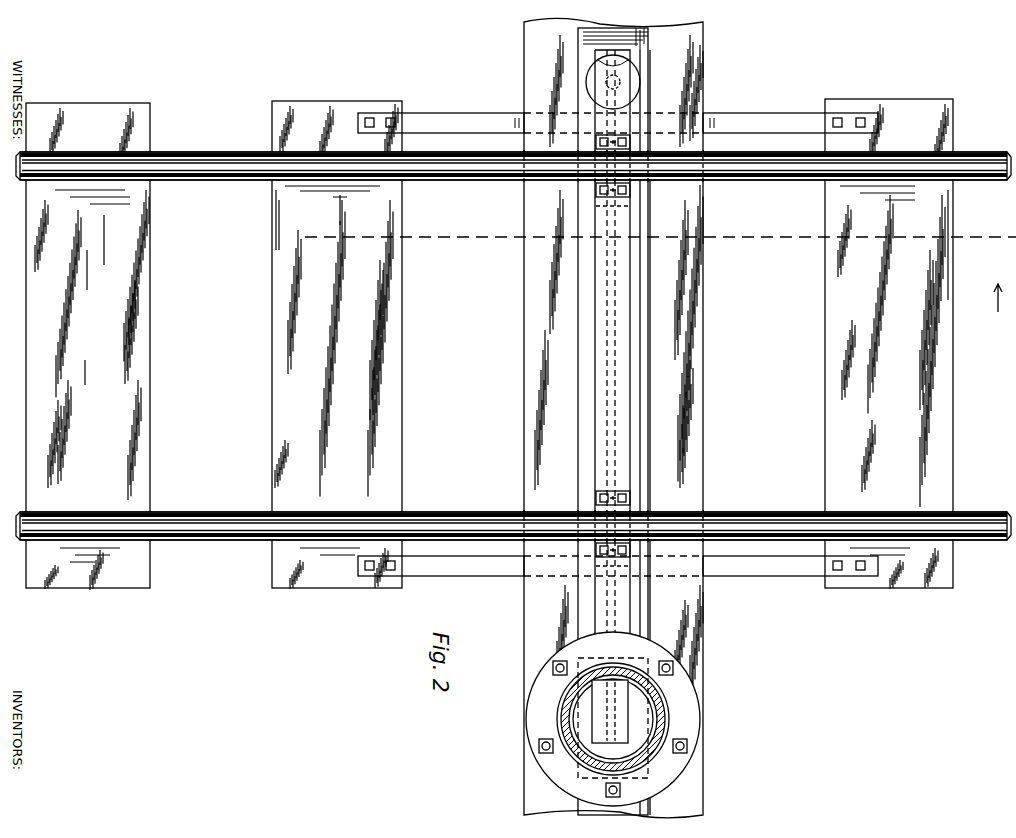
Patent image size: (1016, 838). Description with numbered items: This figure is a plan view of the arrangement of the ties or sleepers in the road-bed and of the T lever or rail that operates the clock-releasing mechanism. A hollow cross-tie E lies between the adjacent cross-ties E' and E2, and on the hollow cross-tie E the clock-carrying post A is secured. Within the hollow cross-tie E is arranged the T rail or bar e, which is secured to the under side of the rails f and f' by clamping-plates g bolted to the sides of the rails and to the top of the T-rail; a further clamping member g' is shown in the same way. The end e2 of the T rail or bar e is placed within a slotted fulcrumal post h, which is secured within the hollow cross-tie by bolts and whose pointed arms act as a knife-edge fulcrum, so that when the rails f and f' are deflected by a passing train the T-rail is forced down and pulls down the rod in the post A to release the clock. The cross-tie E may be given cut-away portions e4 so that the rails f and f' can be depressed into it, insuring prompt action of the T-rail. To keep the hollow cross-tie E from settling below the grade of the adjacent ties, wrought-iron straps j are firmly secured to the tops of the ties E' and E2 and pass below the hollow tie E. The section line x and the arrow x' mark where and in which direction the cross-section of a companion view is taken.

The clock-carrying post A is at (556, 721).
The hollow cross-tie E is at (613, 417).
The adjacent cross-tie E' is at (889, 344).
The adjacent cross-tie E2 is at (337, 345).
The T rail or bar e is at (600, 724).
The end of T-rail e2 is at (613, 83).
The cut-away portions e4 is at (714, 186).
The rail f is at (513, 172).
The rail f' is at (513, 509).
The clamping-plate g is at (591, 336).
The clamp bolt g' is at (612, 394).
The slotted fulcrumal post h is at (588, 76).
The wrought-iron straps j is at (433, 113).
The section line x is at (618, 244).
The arrow x' is at (1004, 297).